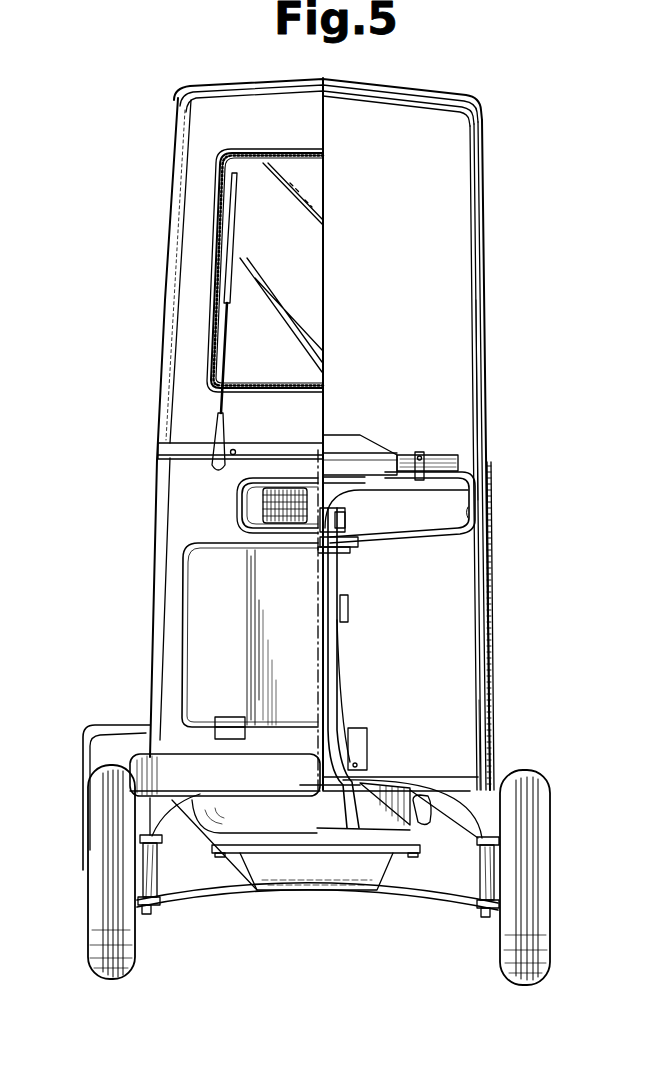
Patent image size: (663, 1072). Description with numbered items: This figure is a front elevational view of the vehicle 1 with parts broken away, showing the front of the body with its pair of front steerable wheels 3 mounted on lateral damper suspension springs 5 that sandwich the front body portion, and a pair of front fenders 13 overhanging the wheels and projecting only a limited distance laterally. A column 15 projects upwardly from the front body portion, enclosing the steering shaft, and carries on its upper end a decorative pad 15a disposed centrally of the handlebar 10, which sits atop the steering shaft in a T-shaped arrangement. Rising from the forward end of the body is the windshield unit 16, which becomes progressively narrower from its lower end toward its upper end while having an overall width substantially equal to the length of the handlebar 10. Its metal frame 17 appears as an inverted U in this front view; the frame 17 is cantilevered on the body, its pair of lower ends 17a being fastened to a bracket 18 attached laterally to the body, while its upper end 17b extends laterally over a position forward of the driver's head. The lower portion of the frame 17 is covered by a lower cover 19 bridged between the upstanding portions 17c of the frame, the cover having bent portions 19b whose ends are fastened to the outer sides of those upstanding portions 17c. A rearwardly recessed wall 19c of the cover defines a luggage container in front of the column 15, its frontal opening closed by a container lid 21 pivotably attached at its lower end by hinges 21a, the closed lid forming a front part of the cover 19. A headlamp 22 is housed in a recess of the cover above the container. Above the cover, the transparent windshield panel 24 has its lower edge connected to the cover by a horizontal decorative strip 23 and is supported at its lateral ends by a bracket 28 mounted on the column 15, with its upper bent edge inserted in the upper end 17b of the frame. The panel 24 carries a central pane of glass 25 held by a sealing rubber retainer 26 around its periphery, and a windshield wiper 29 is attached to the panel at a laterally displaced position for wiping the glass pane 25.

The vehicle 1 is at (378, 903).
The front steerable wheels 3 is at (100, 930).
The lateral damper suspension springs 5 is at (191, 838).
The handlebar 10 is at (430, 453).
The front fenders 13 is at (87, 768).
The column 15 is at (340, 683).
The decorative pad 15a is at (345, 435).
The windshield unit 16 is at (156, 385).
The frame 17 is at (486, 214).
The lower ends of the frame 17a is at (478, 722).
The upper end of the frame 17b is at (445, 83).
The upstanding portions of the frame 17c is at (484, 298).
The bracket 18 is at (462, 778).
The lower cover 19 is at (176, 498).
The bent portions 19b is at (494, 680).
The rearwardly recessed wall 19c is at (254, 514).
The container lid 21 is at (195, 622).
The hinges 21a is at (230, 716).
The headlamp 22 is at (280, 487).
The horizontal decorative strip 23 is at (175, 450).
The windshield panel 24 is at (208, 194).
The pane of glass 25 is at (310, 207).
The sealing rubber retainer 26 is at (303, 152).
The bracket 28 is at (410, 546).
The windshield wiper 29 is at (229, 238).